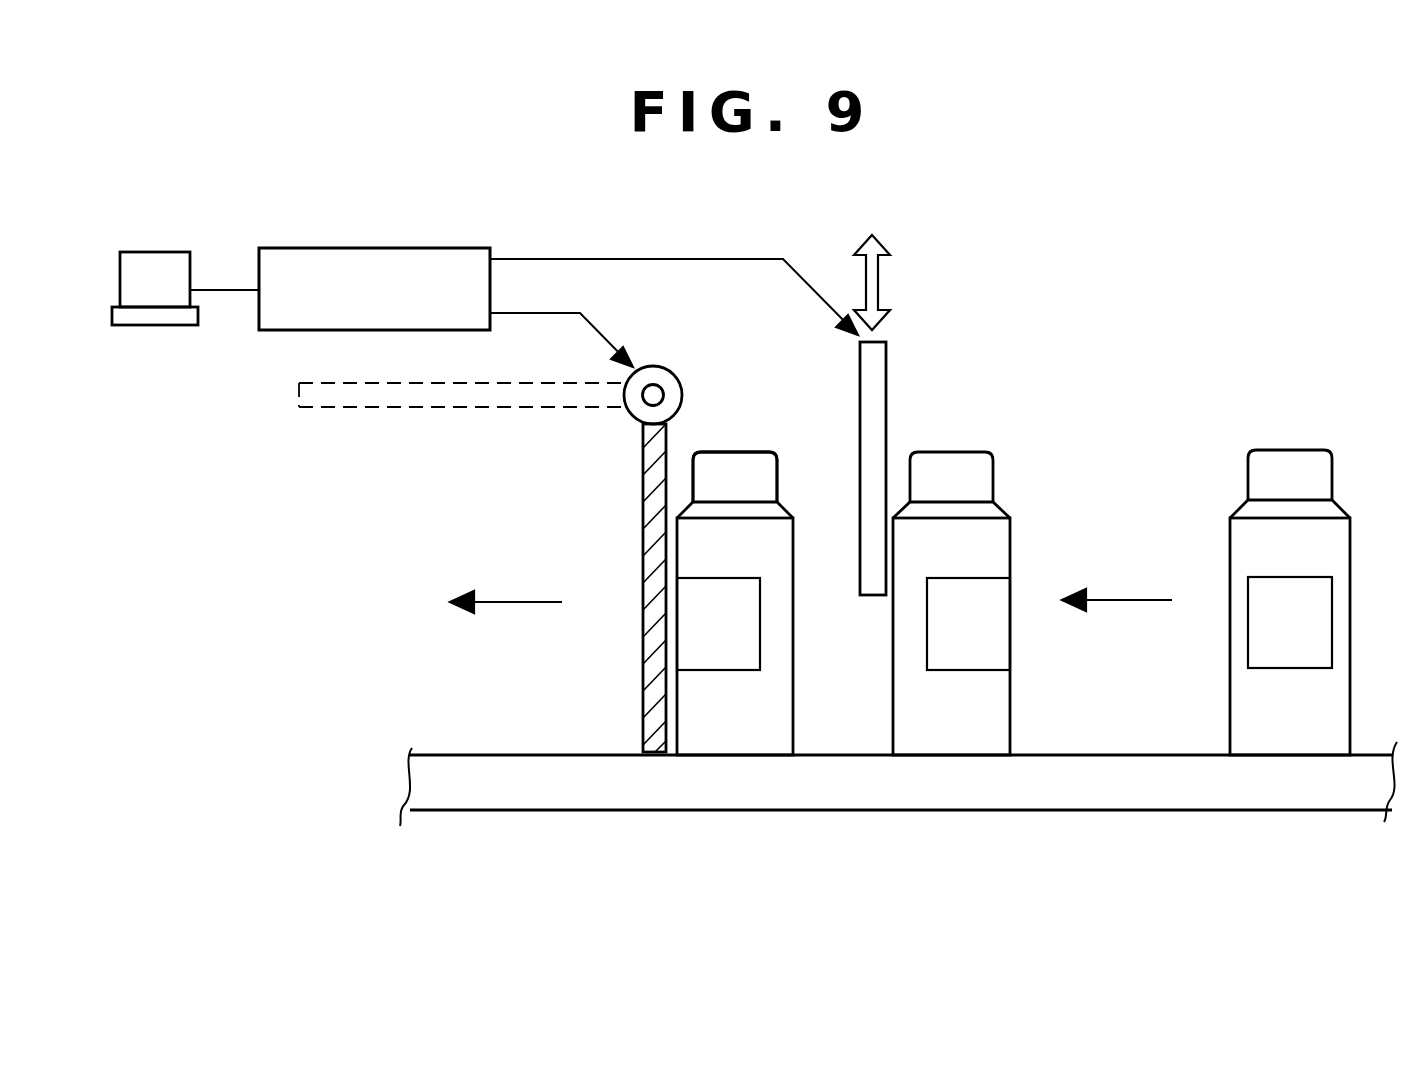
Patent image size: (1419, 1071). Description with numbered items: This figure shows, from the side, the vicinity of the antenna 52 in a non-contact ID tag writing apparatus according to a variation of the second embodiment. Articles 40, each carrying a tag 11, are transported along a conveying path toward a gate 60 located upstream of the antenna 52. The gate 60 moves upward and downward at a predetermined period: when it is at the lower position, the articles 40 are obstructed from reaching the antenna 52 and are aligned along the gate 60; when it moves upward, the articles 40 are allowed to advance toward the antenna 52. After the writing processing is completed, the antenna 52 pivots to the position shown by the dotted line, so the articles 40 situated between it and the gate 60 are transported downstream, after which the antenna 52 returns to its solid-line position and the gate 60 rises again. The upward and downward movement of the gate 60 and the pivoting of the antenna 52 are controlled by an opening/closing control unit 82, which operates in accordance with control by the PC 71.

The PC 71 is at (152, 252).
The opening/closing control unit 82 is at (419, 248).
The antenna 52 is at (643, 466).
The gate 60 is at (874, 385).
The tag 11 is at (735, 645).
The article 40 is at (734, 473).